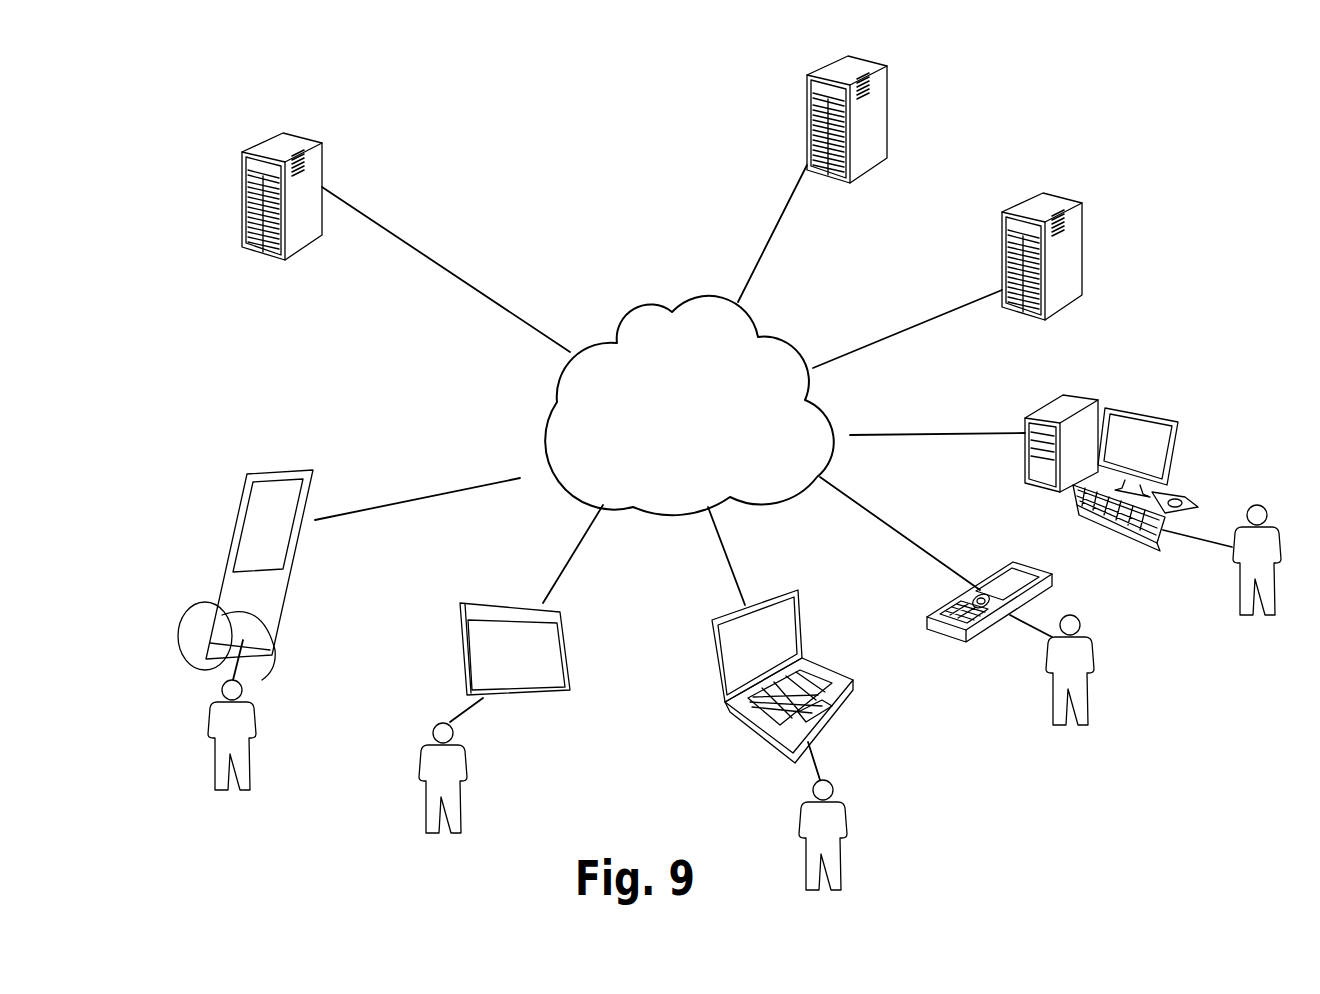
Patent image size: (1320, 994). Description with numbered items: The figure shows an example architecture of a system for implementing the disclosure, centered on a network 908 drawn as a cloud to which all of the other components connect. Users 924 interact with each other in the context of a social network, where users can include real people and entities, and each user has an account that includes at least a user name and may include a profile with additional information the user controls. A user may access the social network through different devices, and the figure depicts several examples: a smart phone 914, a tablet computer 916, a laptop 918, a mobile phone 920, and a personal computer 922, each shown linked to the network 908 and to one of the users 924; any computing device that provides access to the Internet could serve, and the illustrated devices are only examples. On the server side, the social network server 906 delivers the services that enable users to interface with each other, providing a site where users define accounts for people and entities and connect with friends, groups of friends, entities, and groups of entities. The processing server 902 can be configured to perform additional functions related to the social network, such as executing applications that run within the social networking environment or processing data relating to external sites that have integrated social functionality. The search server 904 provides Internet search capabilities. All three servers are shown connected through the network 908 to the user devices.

The processing server 902 is at (252, 213).
The search server 904 is at (1068, 258).
The social network server 906 is at (812, 140).
The network 908 is at (636, 310).
The smart phone 914 is at (250, 508).
The tablet computer 916 is at (485, 648).
The laptop 918 is at (778, 624).
The mobile phone 920 is at (1012, 577).
The personal computer 922 is at (1155, 450).
The users 924 is at (215, 730).